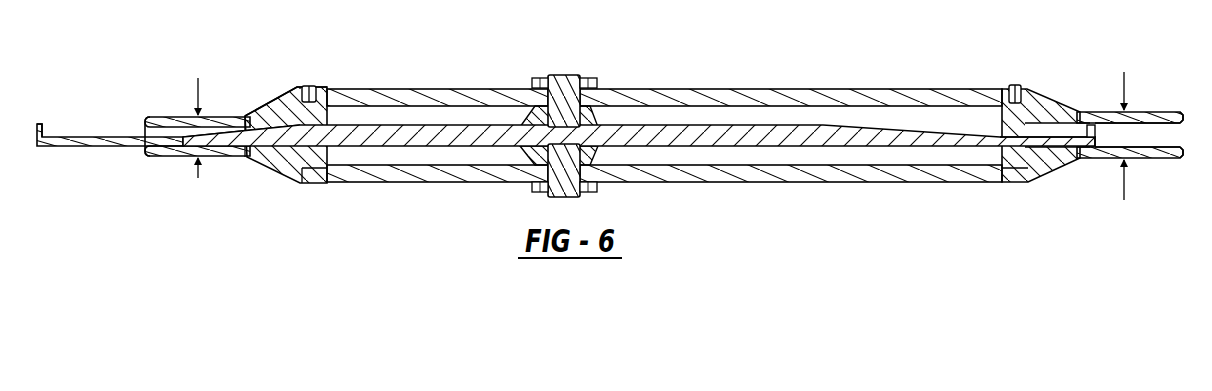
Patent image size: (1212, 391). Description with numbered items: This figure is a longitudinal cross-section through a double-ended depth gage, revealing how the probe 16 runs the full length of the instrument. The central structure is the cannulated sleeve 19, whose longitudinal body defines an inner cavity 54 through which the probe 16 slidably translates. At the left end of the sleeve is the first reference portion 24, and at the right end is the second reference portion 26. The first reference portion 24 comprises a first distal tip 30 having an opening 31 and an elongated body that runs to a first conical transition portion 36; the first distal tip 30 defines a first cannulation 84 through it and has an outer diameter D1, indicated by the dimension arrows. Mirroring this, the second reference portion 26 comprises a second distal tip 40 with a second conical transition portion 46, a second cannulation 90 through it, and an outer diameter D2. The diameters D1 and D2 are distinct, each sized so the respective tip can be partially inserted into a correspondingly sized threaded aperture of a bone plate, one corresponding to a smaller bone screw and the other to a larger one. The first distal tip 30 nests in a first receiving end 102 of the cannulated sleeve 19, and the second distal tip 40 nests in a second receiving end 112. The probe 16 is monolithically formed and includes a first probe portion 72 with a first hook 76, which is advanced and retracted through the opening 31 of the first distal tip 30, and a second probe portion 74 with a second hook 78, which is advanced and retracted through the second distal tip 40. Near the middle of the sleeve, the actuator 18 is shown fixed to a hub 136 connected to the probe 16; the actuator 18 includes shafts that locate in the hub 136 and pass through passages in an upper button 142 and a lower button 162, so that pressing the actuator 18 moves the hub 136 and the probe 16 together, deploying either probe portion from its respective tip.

The probe 16 is at (787, 130).
The actuator 18 is at (576, 72).
The cannulated sleeve 19 is at (712, 97).
The first reference portion 24 is at (232, 84).
The second reference portion 26 is at (1172, 80).
The first distal tip 30 is at (173, 158).
The opening 31 is at (146, 121).
The first conical transition portion 36 is at (273, 166).
The second distal tip 40 is at (1145, 160).
The second conical transition portion 46 is at (1185, 142).
The inner cavity 54 is at (445, 104).
The first probe portion 72 is at (94, 148).
The second probe portion 74 is at (1062, 140).
The first hook 76 is at (36, 124).
The second hook 78 is at (1086, 123).
The first cannulation 84 is at (157, 130).
The second cannulation 90 is at (1131, 128).
The first receiving end 102 is at (320, 96).
The second receiving end 112 is at (1007, 97).
The hub 136 is at (600, 120).
The button 142 is at (541, 79).
The button 162 is at (590, 191).
The outer diameter of first distal tip D1 is at (204, 147).
The outer diameter of second distal tip D2 is at (1120, 149).